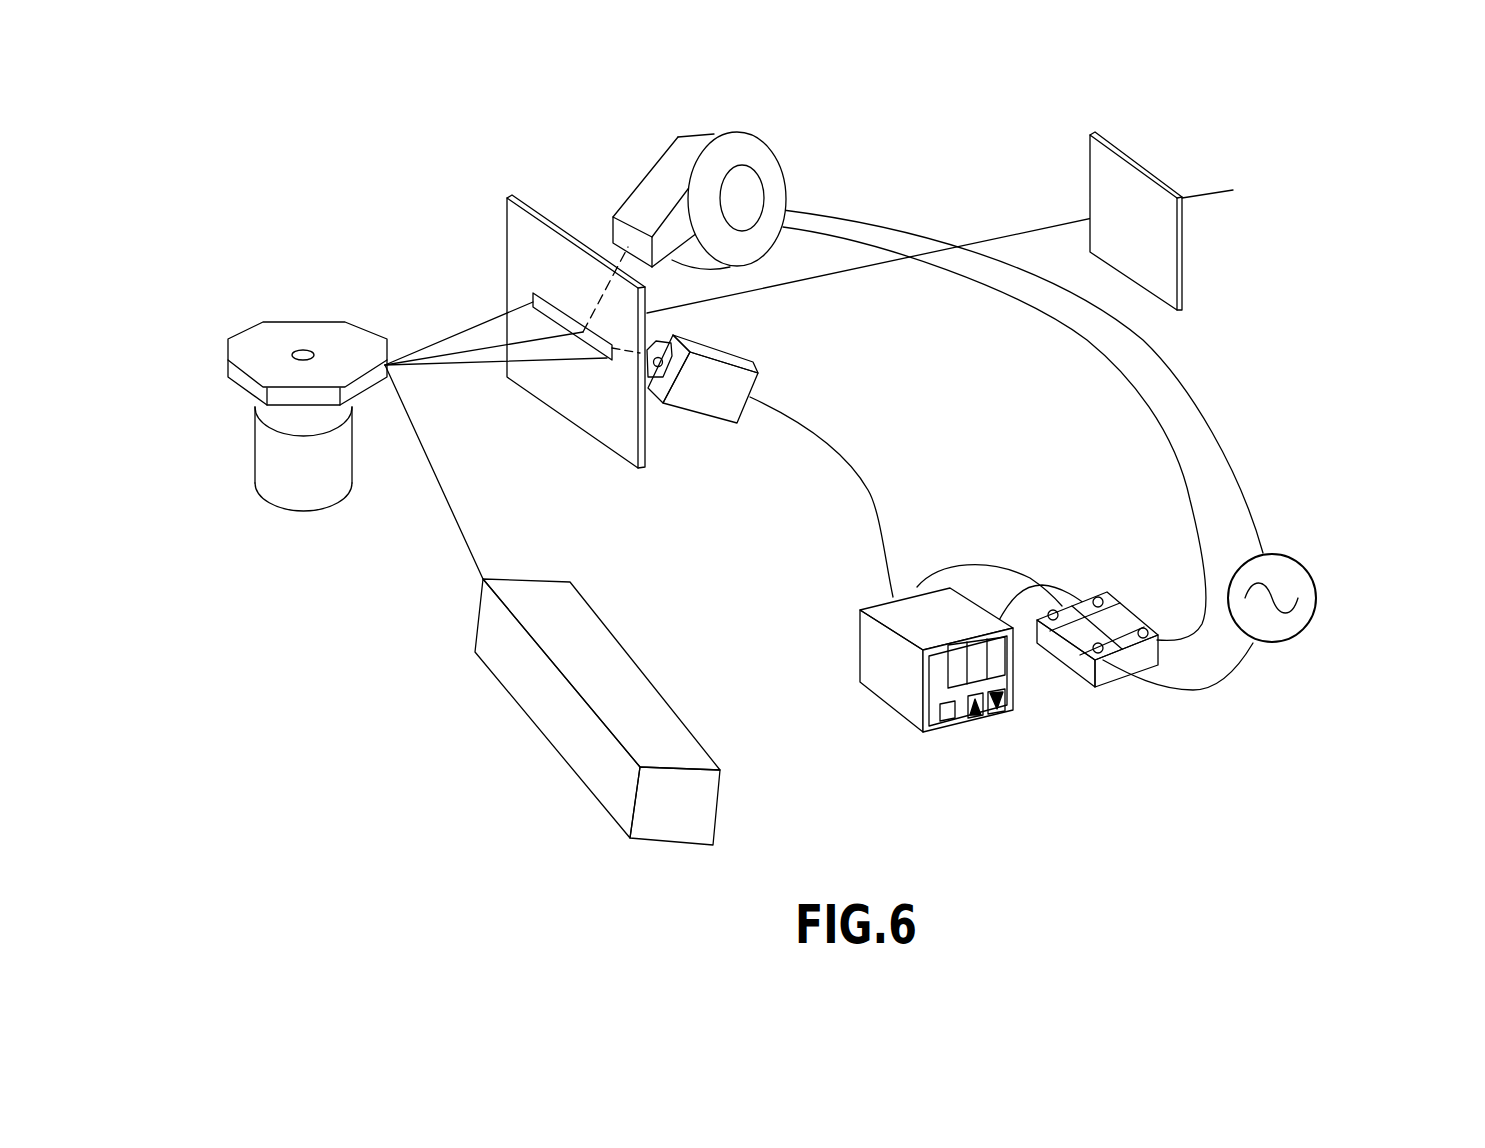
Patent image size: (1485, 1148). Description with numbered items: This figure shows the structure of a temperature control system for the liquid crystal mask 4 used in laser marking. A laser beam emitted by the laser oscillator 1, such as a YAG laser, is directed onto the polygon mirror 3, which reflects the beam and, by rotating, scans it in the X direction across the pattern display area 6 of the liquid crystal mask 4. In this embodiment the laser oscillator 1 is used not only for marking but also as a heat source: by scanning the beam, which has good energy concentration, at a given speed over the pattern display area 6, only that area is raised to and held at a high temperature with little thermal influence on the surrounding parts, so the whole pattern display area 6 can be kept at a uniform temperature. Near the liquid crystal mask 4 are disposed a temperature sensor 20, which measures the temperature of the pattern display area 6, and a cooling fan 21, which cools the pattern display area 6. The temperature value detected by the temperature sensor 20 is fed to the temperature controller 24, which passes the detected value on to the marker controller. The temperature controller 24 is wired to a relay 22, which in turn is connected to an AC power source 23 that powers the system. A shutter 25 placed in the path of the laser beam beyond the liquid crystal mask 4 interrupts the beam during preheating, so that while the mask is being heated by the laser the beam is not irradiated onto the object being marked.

The laser oscillator 1 is at (543, 727).
The polygon mirror 3 is at (303, 330).
The liquid crystal mask 4 is at (535, 230).
The pattern display area 6 is at (540, 293).
The temperature sensor 20 is at (757, 363).
The cooling fan 21 is at (781, 165).
The relay 22 is at (1098, 597).
The AC power source 23 is at (1287, 562).
The temperature controller 24 is at (900, 712).
The shutter 25 is at (1137, 163).